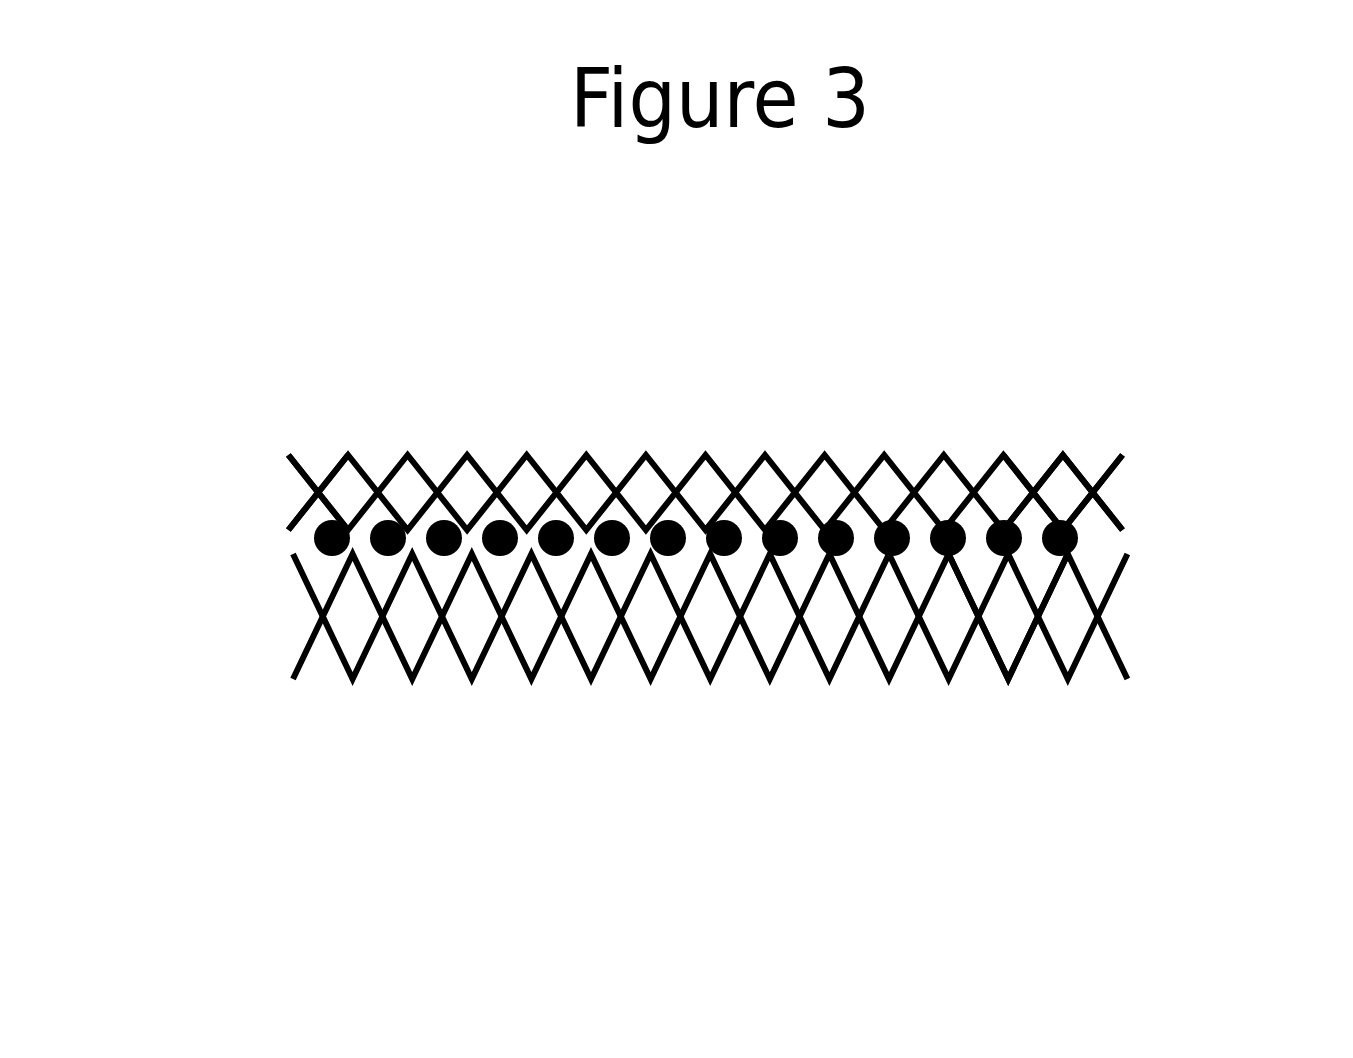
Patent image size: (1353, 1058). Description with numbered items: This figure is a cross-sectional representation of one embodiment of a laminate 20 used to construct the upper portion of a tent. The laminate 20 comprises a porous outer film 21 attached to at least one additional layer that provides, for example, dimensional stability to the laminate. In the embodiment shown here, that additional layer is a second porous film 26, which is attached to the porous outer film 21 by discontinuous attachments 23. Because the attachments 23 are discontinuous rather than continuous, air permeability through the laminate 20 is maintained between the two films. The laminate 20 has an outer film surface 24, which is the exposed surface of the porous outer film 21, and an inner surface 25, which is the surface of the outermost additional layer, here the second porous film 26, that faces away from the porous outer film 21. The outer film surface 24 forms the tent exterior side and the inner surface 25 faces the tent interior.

The laminate 20 is at (290, 458).
The porous outer film 21 is at (318, 493).
The discontinuous attachments 23 is at (1080, 537).
The outer film surface 24 is at (1073, 465).
The inner surface 25 is at (1010, 680).
The second porous film 26 is at (303, 652).